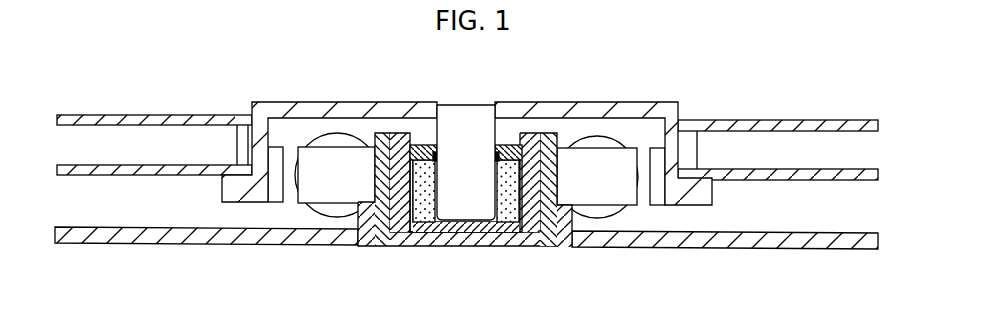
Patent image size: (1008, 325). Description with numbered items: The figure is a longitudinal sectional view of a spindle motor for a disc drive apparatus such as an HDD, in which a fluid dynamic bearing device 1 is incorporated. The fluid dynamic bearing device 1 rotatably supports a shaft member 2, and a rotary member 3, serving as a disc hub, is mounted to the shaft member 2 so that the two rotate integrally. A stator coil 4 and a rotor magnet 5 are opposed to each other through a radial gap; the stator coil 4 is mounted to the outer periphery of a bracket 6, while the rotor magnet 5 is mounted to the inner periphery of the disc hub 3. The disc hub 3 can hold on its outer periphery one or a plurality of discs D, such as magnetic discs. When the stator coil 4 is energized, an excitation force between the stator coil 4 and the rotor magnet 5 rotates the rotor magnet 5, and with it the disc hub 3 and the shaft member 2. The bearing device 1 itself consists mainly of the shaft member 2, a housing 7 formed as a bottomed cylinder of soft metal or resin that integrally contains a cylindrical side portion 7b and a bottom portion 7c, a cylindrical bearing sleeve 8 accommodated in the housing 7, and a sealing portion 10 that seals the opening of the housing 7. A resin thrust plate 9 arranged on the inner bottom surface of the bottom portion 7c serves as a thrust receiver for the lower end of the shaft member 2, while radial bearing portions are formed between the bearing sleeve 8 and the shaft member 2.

The fluid dynamic bearing device 1 is at (522, 132).
The shaft member 2 is at (455, 103).
The rotary member 3 is at (667, 102).
The stator coil 4 is at (628, 205).
The rotor magnet 5 is at (657, 205).
The bracket 6 is at (560, 240).
The housing 7 is at (415, 250).
The cylindrical side portion 7b is at (380, 183).
The bottom portion 7c is at (483, 245).
The bearing sleeve 8 is at (508, 226).
The thrust plate 9 is at (451, 244).
The sealing portion 10 is at (497, 150).
The disc D is at (797, 120).